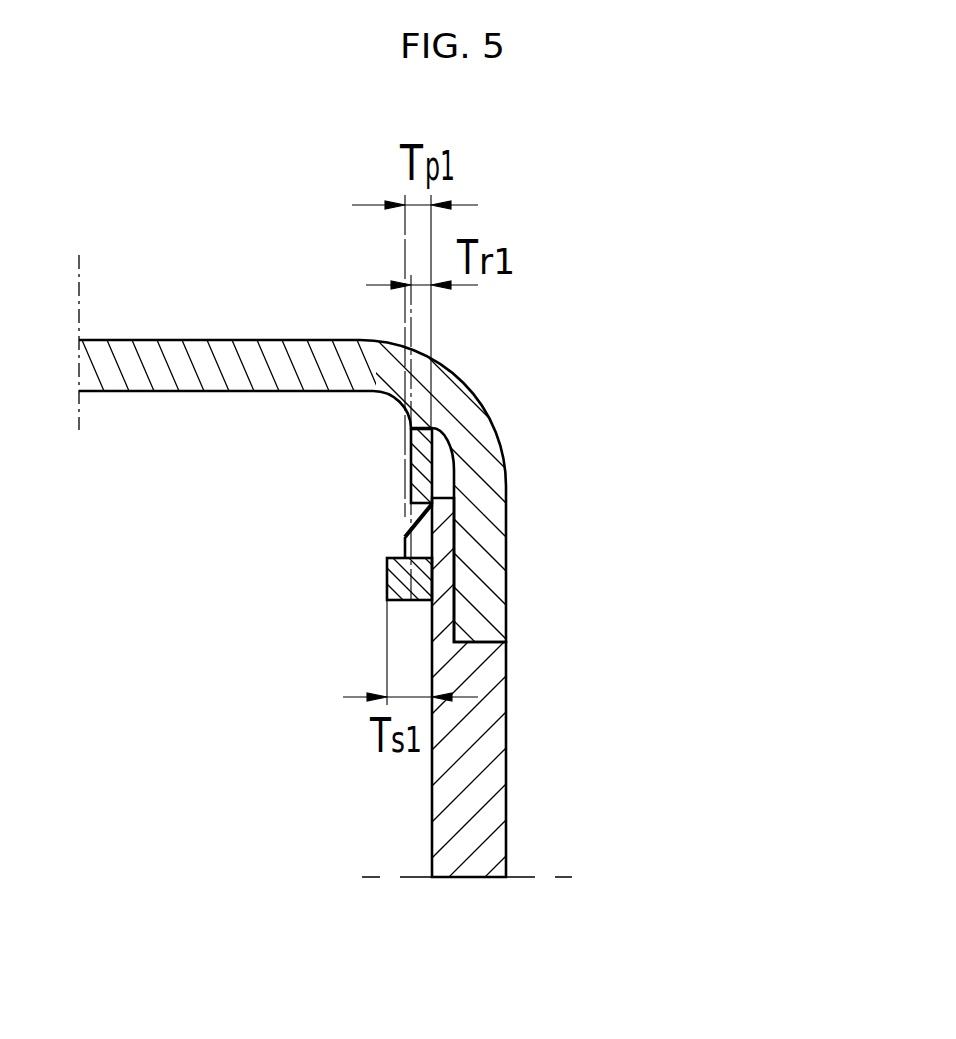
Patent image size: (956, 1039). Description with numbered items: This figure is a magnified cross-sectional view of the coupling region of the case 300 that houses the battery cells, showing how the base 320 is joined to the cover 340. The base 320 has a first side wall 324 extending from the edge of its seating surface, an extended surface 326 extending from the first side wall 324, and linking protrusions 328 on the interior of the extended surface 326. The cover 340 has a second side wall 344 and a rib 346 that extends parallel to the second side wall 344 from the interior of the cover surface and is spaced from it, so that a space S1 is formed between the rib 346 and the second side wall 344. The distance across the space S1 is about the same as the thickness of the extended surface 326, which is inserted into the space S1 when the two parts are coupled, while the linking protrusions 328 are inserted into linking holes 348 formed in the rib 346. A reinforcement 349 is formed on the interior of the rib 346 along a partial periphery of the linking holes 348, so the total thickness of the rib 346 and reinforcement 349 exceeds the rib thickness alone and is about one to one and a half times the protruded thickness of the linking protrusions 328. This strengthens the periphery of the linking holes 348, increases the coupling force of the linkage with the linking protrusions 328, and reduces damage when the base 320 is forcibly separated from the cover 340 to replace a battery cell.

The case 300 is at (748, 428).
The base 320 is at (572, 699).
The first side wall 324 is at (497, 762).
The extended surface 326 is at (462, 612).
The linking protrusion 328 is at (406, 546).
The cover 340 is at (572, 454).
The second side wall 344 is at (497, 548).
The rib 346 is at (412, 444).
The linking hole 348 is at (410, 517).
The reinforcement 349 is at (392, 582).
The space S1 is at (443, 479).